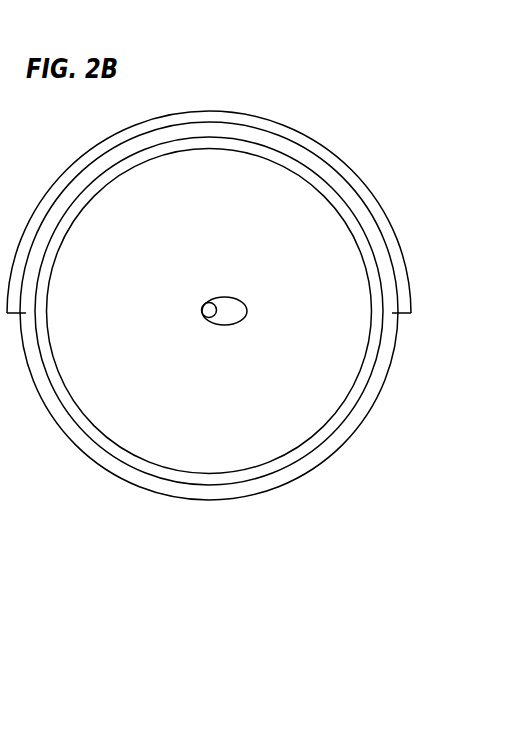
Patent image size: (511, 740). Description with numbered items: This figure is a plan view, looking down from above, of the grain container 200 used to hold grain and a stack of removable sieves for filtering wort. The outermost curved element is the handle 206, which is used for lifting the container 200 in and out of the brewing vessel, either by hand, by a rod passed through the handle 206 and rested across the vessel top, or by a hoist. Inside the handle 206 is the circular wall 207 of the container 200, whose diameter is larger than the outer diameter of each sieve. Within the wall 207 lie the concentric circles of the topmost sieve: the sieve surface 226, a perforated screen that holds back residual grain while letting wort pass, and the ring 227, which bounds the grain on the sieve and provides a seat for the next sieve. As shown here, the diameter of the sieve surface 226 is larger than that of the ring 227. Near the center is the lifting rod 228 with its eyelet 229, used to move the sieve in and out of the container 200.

The grain container 200 is at (345, 83).
The handle 206 is at (374, 200).
The wall 207 is at (367, 415).
The sieve surface 226 is at (252, 142).
The ring 227 is at (163, 155).
The lifting rod 228 is at (202, 310).
The eyelet 229 is at (232, 298).